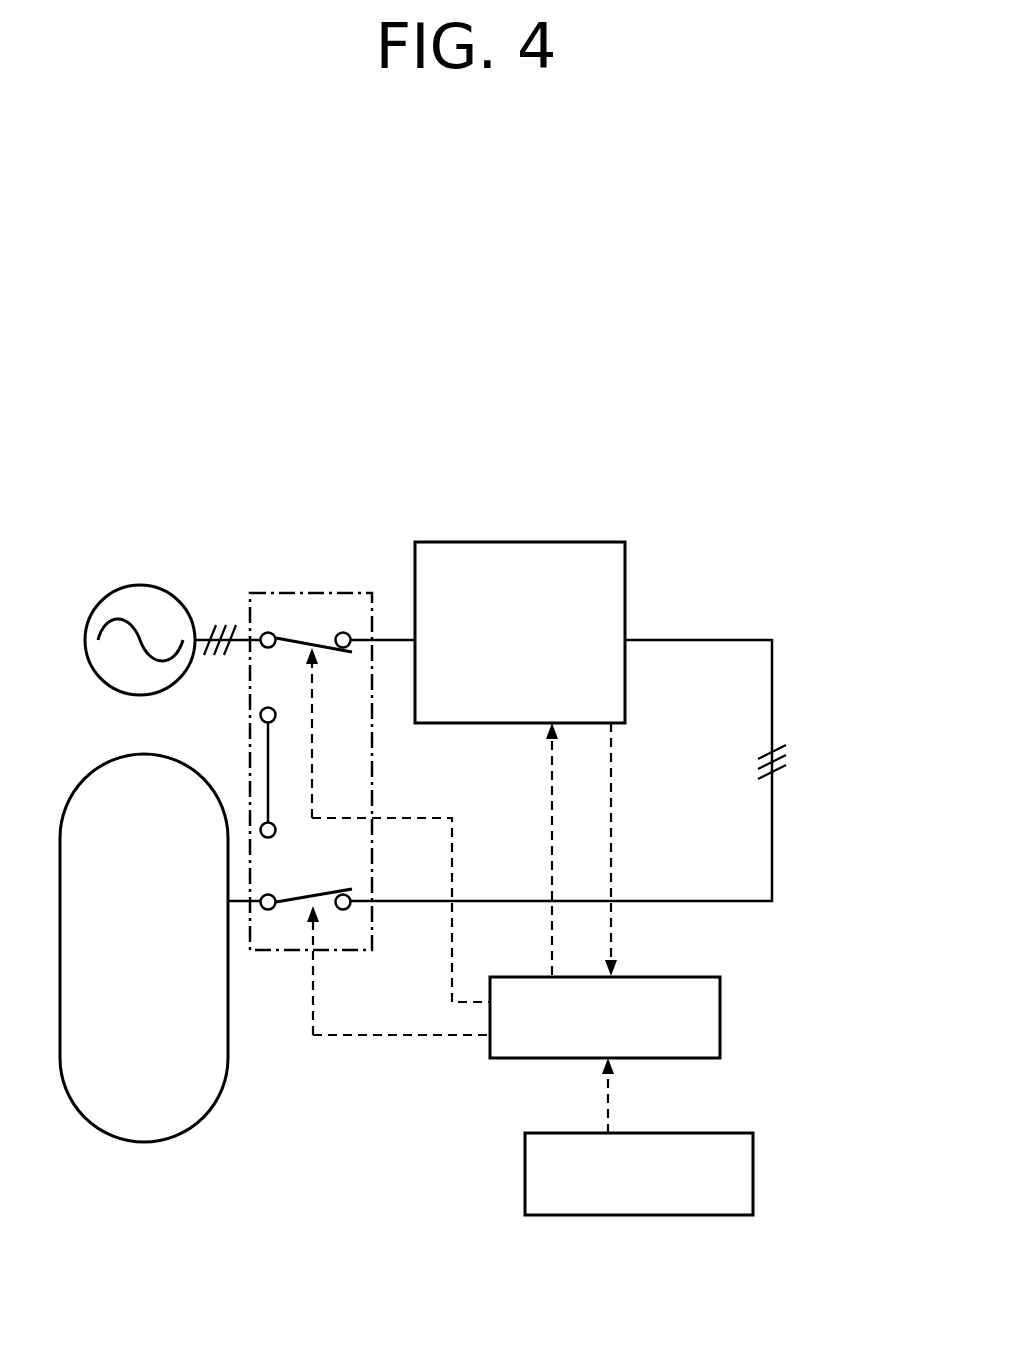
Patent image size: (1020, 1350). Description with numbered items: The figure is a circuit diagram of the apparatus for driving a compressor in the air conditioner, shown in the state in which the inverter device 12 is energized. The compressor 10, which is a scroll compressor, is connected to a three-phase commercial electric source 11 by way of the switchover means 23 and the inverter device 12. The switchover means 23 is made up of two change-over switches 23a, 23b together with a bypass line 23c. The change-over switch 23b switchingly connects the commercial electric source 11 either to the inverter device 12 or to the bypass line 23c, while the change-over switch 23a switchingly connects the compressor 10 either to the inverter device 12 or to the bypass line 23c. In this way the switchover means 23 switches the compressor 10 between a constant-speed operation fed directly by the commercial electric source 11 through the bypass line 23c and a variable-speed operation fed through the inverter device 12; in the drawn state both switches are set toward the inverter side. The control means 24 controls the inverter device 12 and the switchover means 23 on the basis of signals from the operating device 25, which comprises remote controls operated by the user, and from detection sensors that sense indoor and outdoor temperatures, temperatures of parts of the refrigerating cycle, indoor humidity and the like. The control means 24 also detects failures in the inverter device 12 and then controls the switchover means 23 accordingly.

The compressor 10 is at (190, 1067).
The commercial electric source 11 is at (146, 586).
The inverter device 12 is at (560, 542).
The switchover means 23 is at (294, 702).
The change-over switch 23a is at (306, 896).
The change-over switch 23b is at (306, 638).
The bypass line 23c is at (267, 762).
The control means 24 is at (720, 993).
The operating device 25 is at (753, 1150).